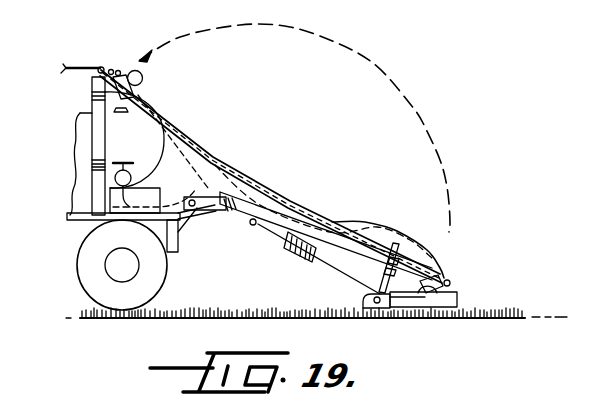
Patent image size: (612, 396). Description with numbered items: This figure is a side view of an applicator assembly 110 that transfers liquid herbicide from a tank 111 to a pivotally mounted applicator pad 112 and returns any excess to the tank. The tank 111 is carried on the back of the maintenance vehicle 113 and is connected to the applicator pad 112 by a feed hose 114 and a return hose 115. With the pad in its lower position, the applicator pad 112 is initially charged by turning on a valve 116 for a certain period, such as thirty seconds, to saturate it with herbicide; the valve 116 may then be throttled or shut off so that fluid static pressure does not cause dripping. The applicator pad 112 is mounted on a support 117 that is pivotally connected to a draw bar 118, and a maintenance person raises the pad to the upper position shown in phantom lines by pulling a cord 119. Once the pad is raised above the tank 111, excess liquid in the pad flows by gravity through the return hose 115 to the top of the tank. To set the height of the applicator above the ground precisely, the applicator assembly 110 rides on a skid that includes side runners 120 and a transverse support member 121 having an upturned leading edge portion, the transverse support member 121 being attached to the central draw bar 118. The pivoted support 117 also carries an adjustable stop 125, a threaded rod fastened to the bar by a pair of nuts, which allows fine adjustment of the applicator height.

The applicator assembly 110 is at (397, 127).
The tank 111 is at (137, 130).
The applicator pad 112 is at (146, 73).
The maintenance vehicle 113 is at (173, 265).
The feed hose 114 is at (217, 160).
The return hose 115 is at (405, 228).
The valve 116 is at (135, 170).
The support 117 is at (340, 250).
The draw bar 118 is at (237, 213).
The cord 119 is at (270, 187).
The side runners 120 is at (443, 308).
The transverse support member 121 is at (385, 310).
The adjustable stop 125 is at (375, 278).